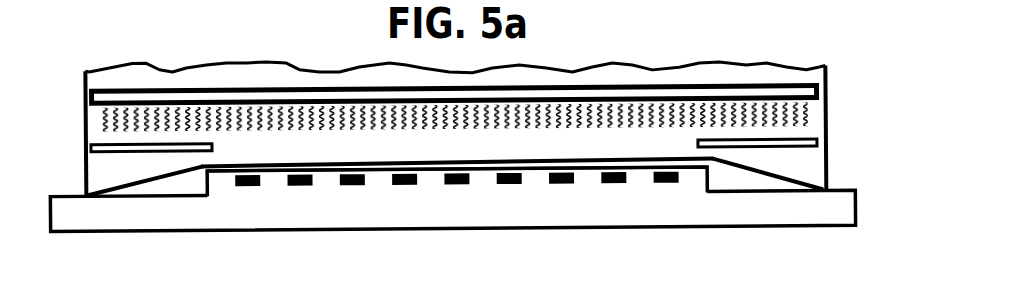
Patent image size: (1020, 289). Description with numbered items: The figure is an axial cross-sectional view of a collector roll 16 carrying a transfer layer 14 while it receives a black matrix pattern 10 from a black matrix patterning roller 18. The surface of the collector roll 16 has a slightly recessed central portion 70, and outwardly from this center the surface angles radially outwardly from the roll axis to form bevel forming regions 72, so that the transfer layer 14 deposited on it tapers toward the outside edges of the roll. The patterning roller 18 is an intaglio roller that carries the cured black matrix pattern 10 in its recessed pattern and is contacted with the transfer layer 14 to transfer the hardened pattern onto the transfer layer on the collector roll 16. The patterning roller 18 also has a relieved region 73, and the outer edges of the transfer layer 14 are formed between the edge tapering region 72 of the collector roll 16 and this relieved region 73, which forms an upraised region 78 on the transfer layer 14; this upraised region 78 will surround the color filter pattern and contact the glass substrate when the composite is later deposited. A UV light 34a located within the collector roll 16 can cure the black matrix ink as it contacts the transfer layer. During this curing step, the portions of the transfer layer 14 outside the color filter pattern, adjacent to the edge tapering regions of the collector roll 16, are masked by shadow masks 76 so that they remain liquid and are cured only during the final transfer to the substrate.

The black matrix pattern 10 is at (350, 183).
The transfer layer 14 is at (380, 163).
The collector roll 16 is at (828, 117).
The black matrix patterning roller 18 is at (857, 210).
The UV light 34a is at (182, 88).
The recessed central portion 70 is at (491, 159).
The bevel forming region 72 is at (770, 168).
The relieved region 73 is at (168, 187).
The shadow mask 76 is at (110, 152).
The upraised region 78 is at (194, 198).